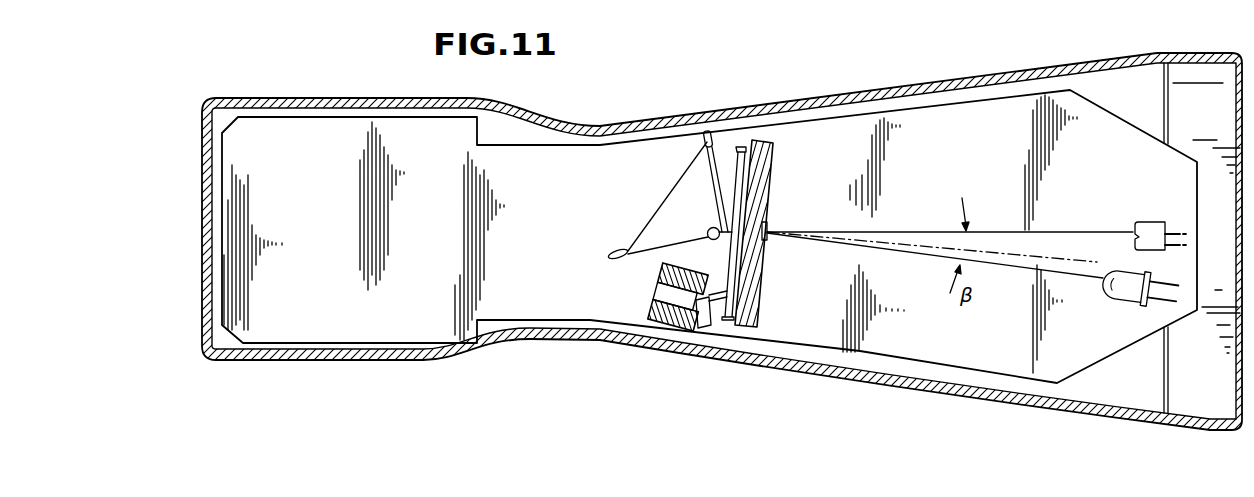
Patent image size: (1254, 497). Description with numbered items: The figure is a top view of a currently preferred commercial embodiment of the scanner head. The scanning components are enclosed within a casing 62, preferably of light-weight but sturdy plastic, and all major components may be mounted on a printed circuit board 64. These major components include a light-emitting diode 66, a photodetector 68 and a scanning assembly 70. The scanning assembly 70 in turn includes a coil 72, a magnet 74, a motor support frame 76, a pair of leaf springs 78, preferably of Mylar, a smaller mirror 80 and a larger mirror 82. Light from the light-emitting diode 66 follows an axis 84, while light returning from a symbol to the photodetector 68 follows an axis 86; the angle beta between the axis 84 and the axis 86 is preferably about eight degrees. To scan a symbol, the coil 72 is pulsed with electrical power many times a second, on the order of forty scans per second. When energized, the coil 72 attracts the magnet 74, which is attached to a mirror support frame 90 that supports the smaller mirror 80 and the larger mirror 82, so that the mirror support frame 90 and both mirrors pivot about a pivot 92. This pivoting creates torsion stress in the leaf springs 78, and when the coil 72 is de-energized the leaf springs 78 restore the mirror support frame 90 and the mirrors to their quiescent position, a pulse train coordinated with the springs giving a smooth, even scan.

The casing 62 is at (813, 93).
The printed circuit board 64 is at (543, 143).
The light-emitting diode 66 is at (1113, 300).
The photodetector 68 is at (1147, 220).
The scanning assembly 70 is at (616, 242).
The coil 72 is at (630, 320).
The magnet 74 is at (707, 318).
The motor support frame 76 is at (608, 257).
The leaf springs 78 is at (712, 173).
The smaller mirror 80 is at (768, 224).
The larger mirror 82 is at (766, 294).
The axis 84 is at (1030, 273).
The axis 86 is at (910, 230).
The mirror support frame 90 is at (740, 147).
The pivot 92 is at (708, 232).